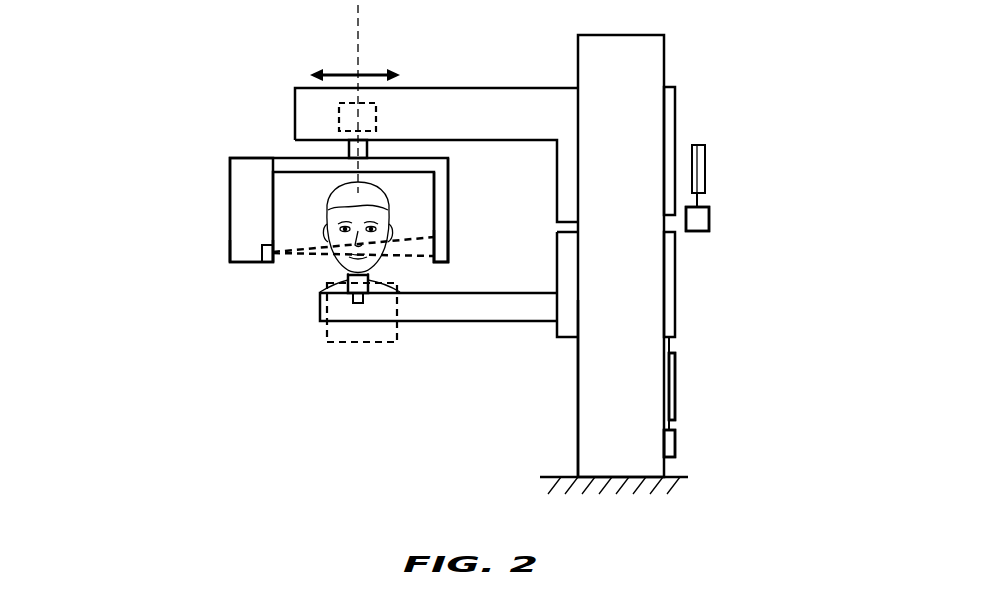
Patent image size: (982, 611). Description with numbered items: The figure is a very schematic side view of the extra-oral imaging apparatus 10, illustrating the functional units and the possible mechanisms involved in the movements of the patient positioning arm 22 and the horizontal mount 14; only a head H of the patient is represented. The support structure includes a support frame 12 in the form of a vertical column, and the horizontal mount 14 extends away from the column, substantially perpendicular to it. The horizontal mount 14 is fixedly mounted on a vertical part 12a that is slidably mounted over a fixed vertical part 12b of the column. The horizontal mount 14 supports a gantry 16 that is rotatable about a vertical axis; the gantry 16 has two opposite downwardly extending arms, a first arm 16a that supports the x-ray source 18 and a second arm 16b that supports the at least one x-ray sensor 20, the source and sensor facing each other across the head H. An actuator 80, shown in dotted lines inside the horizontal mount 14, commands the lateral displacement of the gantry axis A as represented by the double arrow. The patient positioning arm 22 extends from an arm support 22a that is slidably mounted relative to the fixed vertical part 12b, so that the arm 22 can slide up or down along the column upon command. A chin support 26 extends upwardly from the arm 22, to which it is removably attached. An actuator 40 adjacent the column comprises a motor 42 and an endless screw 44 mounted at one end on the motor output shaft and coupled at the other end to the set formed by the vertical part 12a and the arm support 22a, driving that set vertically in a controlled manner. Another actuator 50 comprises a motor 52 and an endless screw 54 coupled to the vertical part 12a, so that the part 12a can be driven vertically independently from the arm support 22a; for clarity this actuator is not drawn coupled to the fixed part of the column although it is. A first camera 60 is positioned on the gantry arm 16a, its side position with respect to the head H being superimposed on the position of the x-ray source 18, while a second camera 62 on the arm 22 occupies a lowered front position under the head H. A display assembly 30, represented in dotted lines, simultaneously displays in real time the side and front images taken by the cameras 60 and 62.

The extra-oral imaging apparatus 10 is at (228, 338).
The support frame 12 is at (722, 52).
The vertical part 12a is at (676, 104).
The fixed vertical part 12b is at (578, 430).
The horizontal mount 14 is at (280, 96).
The gantry 16 is at (200, 177).
The first arm 16a is at (230, 217).
The second arm 16b is at (449, 215).
The x-ray source 18 is at (236, 243).
The x-ray sensor 20 is at (438, 247).
The patient positioning arm 22 is at (436, 326).
The arm support 22a is at (676, 283).
The chin support 26 is at (370, 275).
The display assembly 30 is at (352, 345).
The actuator 40 is at (758, 402).
The motor 42 is at (676, 442).
The endless screw 44 is at (676, 385).
The actuator 50 is at (768, 188).
The motor 52 is at (710, 222).
The endless screw 54 is at (706, 170).
The first camera 60 is at (267, 252).
The second camera 62 is at (360, 303).
The actuator 80 is at (378, 118).
The gantry axis A is at (358, 53).
The head H is at (318, 265).